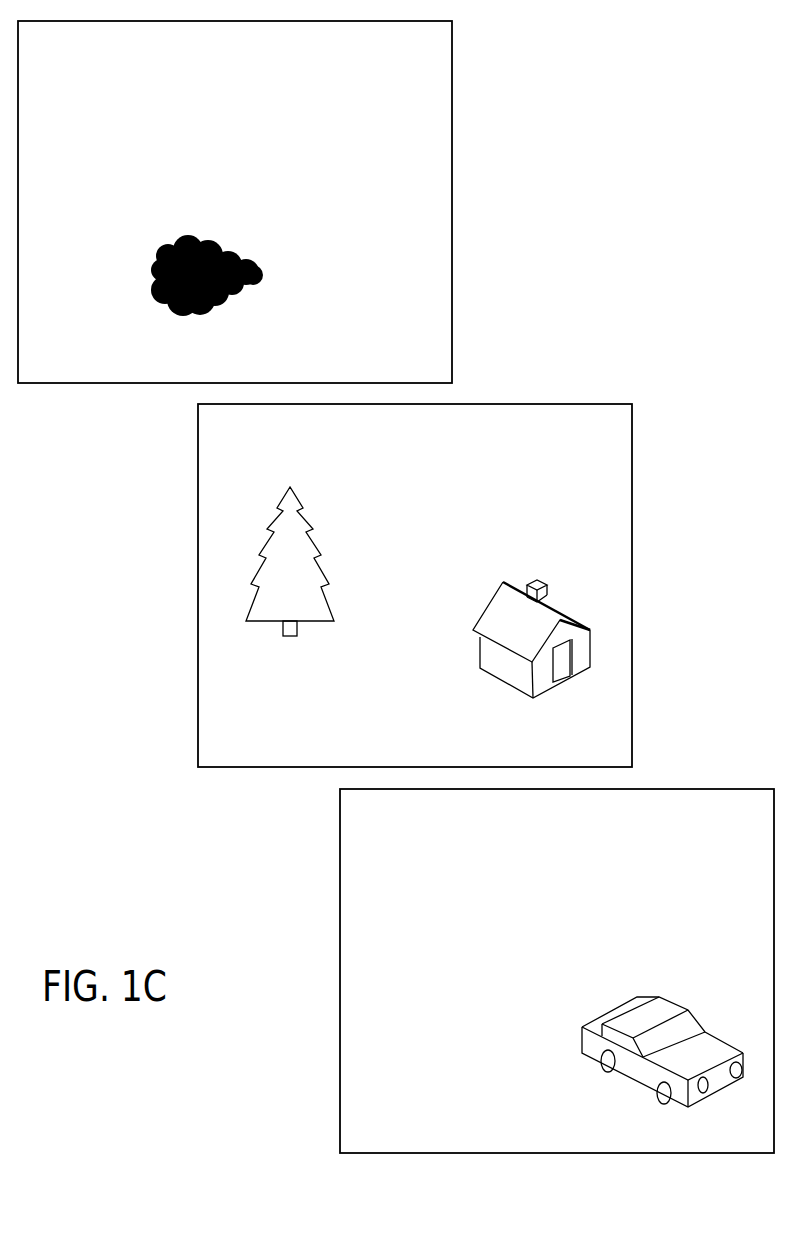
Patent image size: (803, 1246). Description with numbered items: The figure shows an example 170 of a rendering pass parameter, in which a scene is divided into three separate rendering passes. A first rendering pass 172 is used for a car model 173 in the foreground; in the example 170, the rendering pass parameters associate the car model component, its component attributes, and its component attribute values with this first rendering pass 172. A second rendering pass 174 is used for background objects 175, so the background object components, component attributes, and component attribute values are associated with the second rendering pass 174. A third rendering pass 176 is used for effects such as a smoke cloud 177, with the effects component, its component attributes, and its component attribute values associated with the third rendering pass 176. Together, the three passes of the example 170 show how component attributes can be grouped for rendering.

The example of a rendering pass parameter 170 is at (656, 64).
The first rendering pass 172 is at (340, 1042).
The car model 173 is at (637, 998).
The second rendering pass 174 is at (236, 768).
The background objects 175 is at (470, 664).
The third rendering pass 176 is at (118, 384).
The smoke cloud 177 is at (259, 271).